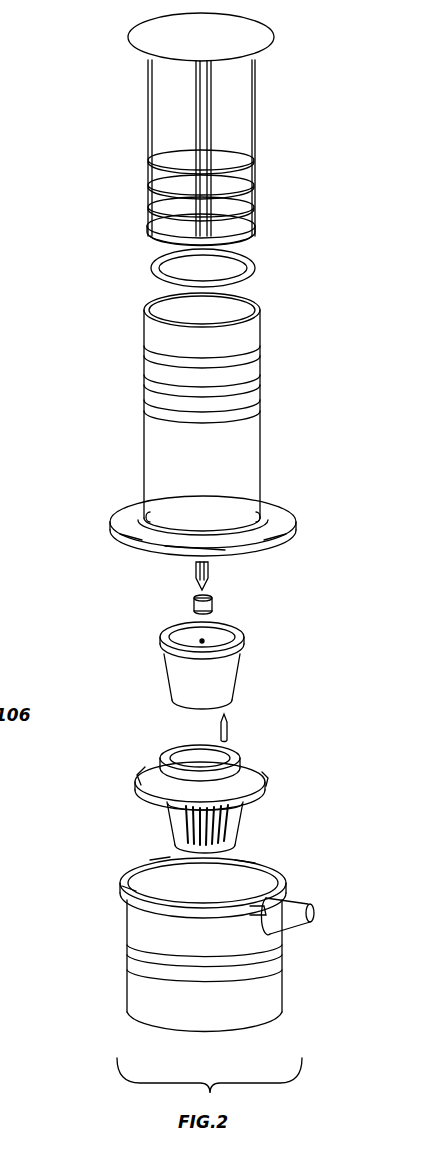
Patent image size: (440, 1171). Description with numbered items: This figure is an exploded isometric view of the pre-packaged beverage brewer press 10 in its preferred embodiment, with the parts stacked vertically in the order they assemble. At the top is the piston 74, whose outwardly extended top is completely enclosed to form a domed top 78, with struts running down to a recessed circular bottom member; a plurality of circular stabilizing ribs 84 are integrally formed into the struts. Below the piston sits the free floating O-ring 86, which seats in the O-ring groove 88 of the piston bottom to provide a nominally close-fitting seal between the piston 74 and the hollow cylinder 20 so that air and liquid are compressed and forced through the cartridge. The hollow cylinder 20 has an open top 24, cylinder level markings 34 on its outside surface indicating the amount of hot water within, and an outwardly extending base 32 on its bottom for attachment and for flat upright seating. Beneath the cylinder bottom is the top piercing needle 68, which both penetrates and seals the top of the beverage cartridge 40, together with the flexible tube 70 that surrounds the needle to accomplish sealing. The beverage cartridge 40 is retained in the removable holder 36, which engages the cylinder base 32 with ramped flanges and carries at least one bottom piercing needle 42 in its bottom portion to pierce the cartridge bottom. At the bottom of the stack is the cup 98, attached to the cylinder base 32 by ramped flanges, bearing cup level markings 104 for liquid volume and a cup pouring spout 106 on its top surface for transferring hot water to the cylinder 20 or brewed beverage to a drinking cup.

The pre-packaged beverage brewer press 10 is at (318, 58).
The domed top 78 is at (129, 43).
The piston 74 is at (150, 152).
The circular stabilizing ribs 84 is at (255, 142).
The O-ring groove 88 is at (258, 226).
The O-ring 86 is at (152, 270).
The open top 24 is at (260, 300).
The hollow cylinder 20 is at (262, 432).
The cylinder level markings 34 is at (146, 392).
The base 32 is at (112, 532).
The top piercing needle 68 is at (212, 580).
The flexible tube 70 is at (193, 604).
The beverage cartridge 40 is at (244, 685).
The bottom piercing needle 42 is at (232, 728).
The removable holder 36 is at (142, 785).
The cup pouring spout 106 is at (314, 910).
The cup 98 is at (284, 1012).
The cup level markings 104 is at (128, 960).